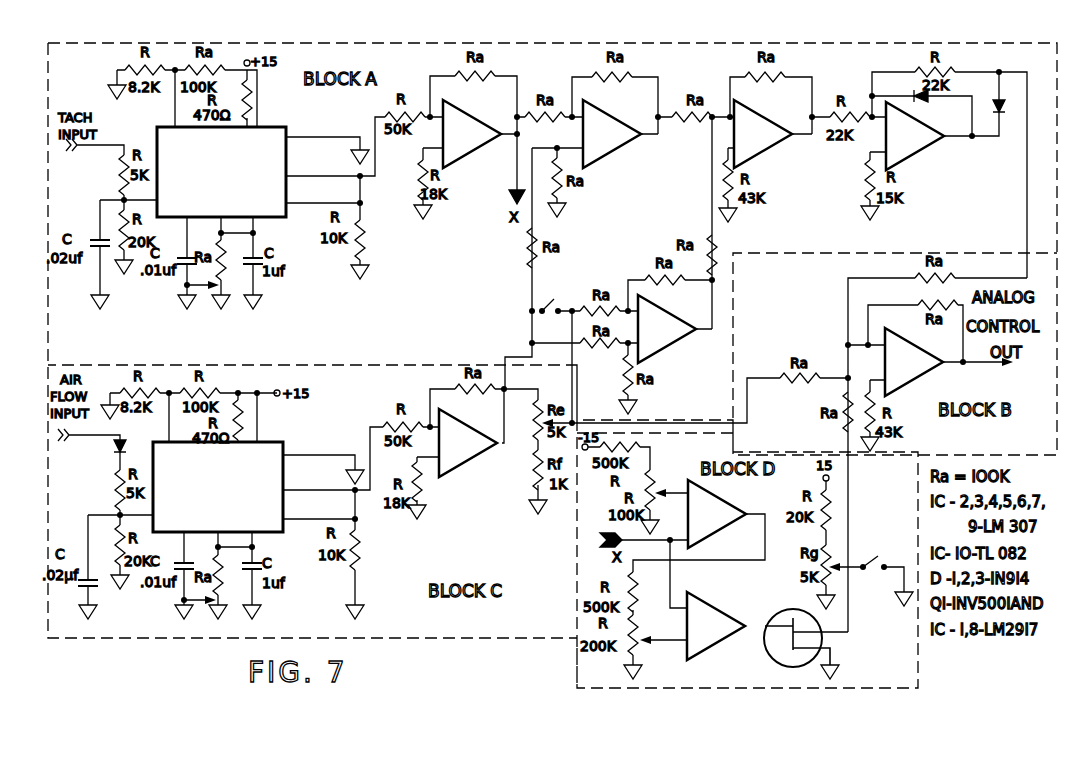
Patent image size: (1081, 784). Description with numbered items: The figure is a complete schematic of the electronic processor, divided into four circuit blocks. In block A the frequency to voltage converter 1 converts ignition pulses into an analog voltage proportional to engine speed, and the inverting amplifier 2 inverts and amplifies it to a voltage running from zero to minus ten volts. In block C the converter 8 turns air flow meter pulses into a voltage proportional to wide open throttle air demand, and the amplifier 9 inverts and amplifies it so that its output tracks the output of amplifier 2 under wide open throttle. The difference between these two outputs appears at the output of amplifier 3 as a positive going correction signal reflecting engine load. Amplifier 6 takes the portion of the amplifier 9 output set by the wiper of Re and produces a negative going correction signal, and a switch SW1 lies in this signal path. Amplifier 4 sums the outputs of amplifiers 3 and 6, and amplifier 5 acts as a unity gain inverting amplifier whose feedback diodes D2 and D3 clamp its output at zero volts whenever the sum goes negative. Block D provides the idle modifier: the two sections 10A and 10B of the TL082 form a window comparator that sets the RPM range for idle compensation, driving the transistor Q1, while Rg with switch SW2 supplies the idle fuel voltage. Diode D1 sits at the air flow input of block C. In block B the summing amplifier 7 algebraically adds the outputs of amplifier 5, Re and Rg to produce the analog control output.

The frequency to voltage converter 1 is at (221, 172).
The inverting amplifier 2 is at (472, 134).
The difference amplifier 3 is at (612, 134).
The summing amplifier 4 is at (763, 134).
The clamped inverting amplifier 5 is at (915, 136).
The correction amplifier 6 is at (667, 329).
The summing amplifier 7 is at (914, 362).
The frequency to voltage converter 8 is at (218, 487).
The inverting amplifier 9 is at (468, 443).
The window comparator section 10A is at (717, 515).
The window comparator section 10B is at (716, 626).
The diode D1 is at (110, 451).
The feedback diode D2 is at (926, 104).
The feedback diode D3 is at (1006, 113).
The transistor Q1 is at (815, 644).
The switch SW1 is at (554, 301).
The switch SW2 is at (871, 555).